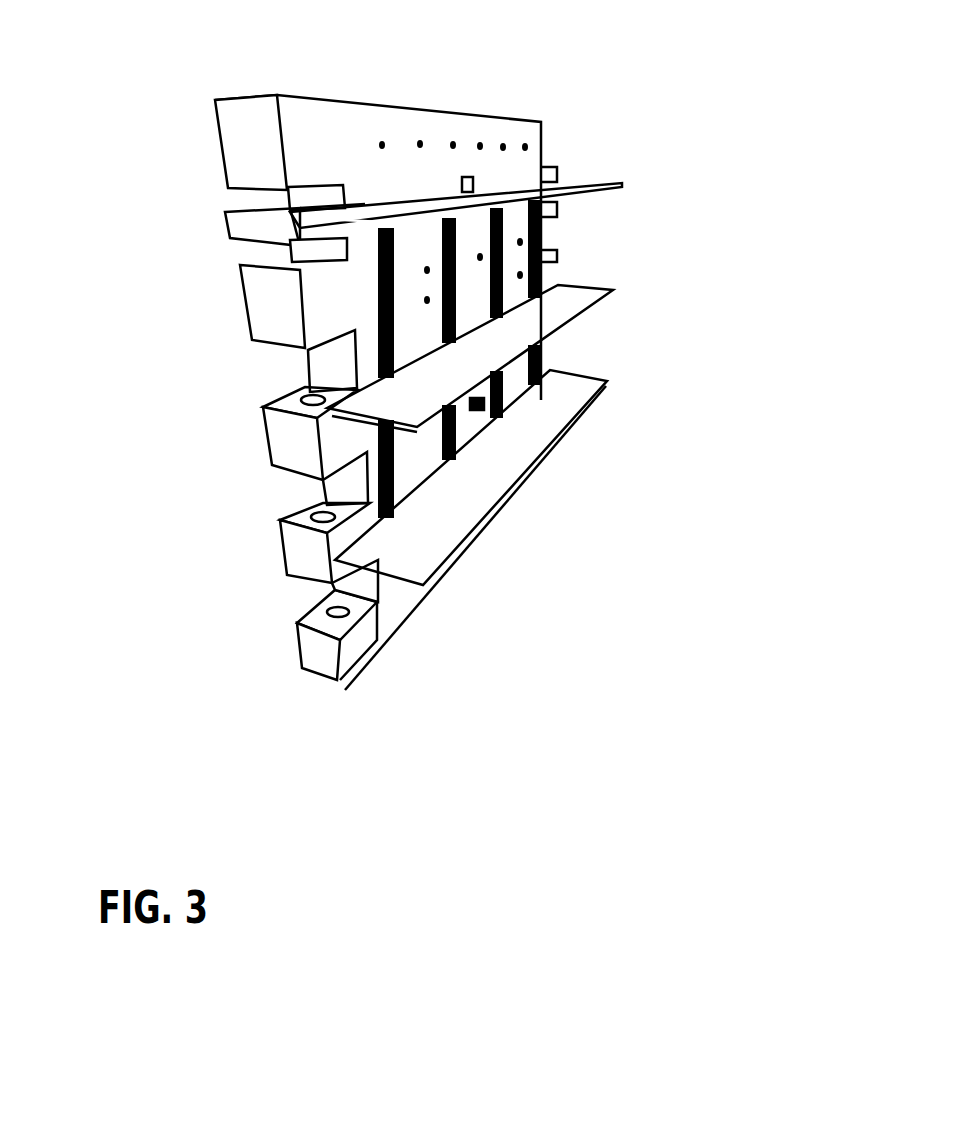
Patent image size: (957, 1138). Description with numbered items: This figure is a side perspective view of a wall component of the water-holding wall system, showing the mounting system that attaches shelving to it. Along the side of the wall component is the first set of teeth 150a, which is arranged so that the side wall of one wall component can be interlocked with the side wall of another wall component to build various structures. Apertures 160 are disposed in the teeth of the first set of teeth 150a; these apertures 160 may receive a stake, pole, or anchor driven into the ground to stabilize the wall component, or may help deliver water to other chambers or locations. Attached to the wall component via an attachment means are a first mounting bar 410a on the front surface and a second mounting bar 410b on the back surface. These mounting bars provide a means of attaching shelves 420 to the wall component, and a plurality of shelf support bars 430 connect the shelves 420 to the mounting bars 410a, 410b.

The shelf support bars 430 is at (530, 275).
The shelves 420 is at (582, 390).
The first mounting bar 410a is at (298, 243).
The second mounting bar 410b is at (245, 230).
The first set of teeth 150a is at (287, 437).
The apertures 160 is at (325, 513).